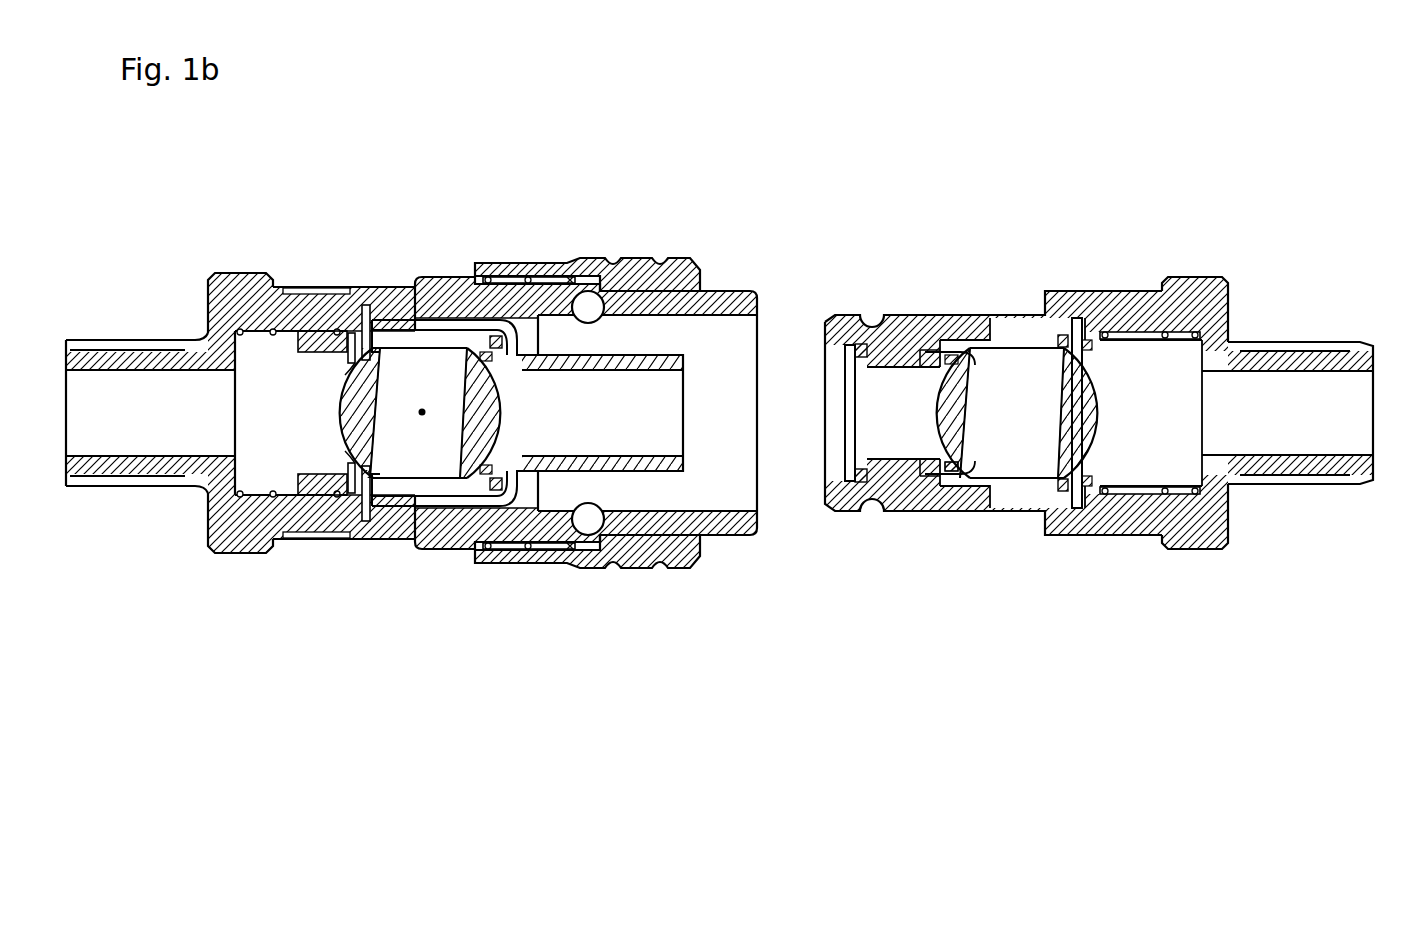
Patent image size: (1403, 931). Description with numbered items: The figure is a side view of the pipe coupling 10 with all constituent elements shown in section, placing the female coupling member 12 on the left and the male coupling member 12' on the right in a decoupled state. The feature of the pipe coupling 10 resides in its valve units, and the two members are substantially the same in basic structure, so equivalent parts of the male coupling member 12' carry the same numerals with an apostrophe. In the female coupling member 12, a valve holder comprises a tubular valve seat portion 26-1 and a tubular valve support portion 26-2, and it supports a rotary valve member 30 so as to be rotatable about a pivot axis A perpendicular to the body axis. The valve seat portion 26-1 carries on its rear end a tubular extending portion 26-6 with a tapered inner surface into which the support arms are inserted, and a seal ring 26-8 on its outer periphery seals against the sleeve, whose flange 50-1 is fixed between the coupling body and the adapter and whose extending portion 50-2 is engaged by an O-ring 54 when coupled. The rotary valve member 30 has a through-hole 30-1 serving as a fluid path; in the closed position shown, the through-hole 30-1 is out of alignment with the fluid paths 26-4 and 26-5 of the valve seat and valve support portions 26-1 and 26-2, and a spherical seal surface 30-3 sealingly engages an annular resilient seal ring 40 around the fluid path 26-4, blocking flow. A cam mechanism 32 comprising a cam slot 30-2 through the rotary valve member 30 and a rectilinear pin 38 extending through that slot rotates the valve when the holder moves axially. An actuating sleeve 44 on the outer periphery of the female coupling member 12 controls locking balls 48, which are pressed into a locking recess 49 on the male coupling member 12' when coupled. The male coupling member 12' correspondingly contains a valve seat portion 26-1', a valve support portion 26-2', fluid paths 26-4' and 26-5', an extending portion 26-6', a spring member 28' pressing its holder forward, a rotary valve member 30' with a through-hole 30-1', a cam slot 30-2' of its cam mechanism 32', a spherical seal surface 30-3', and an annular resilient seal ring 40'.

The pipe coupling 10 is at (790, 188).
The female coupling member 12 is at (411, 338).
The male coupling member 12' is at (1099, 346).
The valve seat portion 26-1 is at (586, 368).
The valve support portion 26-2 is at (326, 381).
The fluid path 26-4 is at (648, 357).
The fluid path 26-5 is at (206, 439).
The extending portion 26-6 is at (447, 366).
The seal ring 26-8 is at (498, 336).
The rotary valve member 30 is at (399, 467).
The through-hole 30-1 is at (440, 493).
The cam slot 30-2 is at (410, 263).
The spherical seal surface 30-3 is at (505, 540).
The cam mechanism 32 is at (362, 370).
The rectilinear pin 38 is at (310, 348).
The annular resilient seal ring 40 is at (517, 543).
The actuating sleeve 44 is at (632, 262).
The locking balls 48 is at (589, 300).
The flange 50-1 is at (365, 522).
The extending portion 50-2 is at (676, 284).
The pivot axis A is at (422, 415).
The valve seat portion 26-1' is at (993, 448).
The valve support portion 26-2' is at (1109, 467).
The fluid path 26-4' is at (837, 456).
The fluid path 26-5' is at (1273, 492).
The extending portion 26-6' is at (980, 323).
The spring member 28' is at (1173, 413).
The rotary valve member 30' is at (1017, 372).
The through-hole 30-1' is at (1015, 475).
The cam slot 30-2' is at (1060, 301).
The spherical seal surface 30-3' is at (981, 345).
The cam mechanism 32' is at (1092, 338).
The annular resilient seal ring 40' is at (973, 513).
The locking recess 49 is at (877, 327).
The O-ring 54 is at (855, 342).